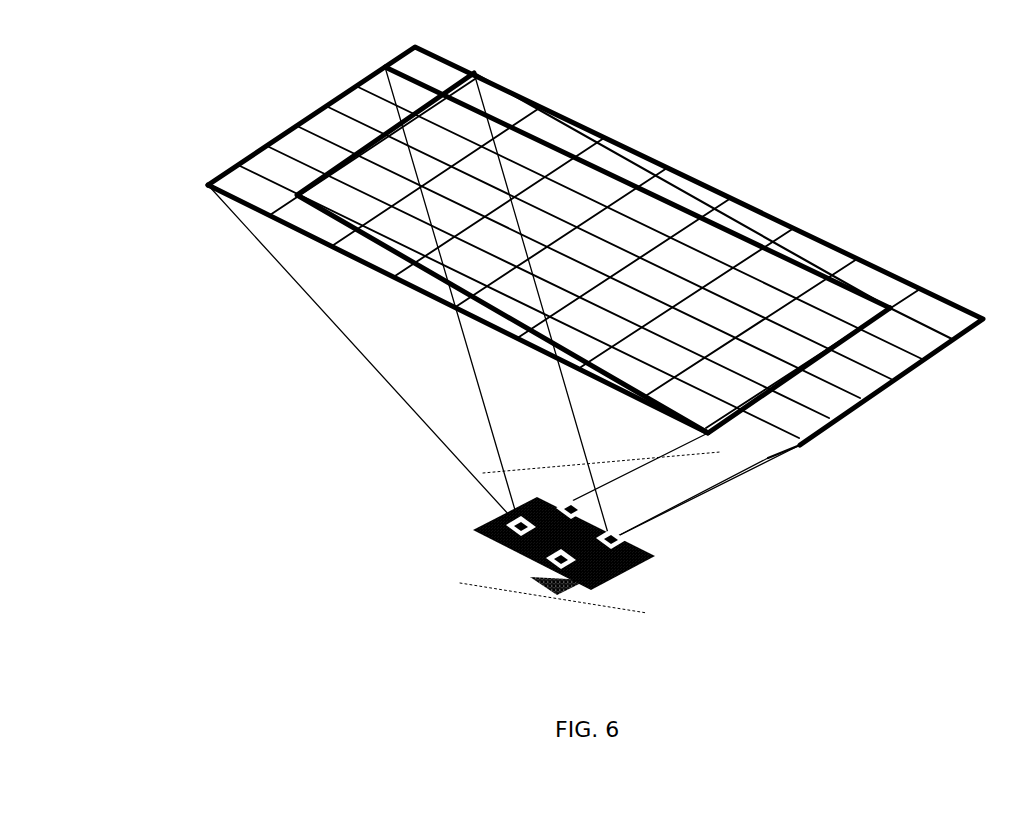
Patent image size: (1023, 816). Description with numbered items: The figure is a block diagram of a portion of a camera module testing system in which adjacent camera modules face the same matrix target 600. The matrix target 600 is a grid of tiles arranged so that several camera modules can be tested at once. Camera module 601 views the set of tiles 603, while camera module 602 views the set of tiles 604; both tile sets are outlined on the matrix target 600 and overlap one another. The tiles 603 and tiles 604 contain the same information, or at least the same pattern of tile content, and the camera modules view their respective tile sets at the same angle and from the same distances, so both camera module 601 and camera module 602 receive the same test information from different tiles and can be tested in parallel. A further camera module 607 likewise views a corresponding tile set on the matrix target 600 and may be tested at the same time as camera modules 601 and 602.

The matrix target 600 is at (714, 377).
The camera module 601 is at (505, 524).
The camera module 602 is at (627, 542).
The tiles 603 is at (228, 168).
The tiles 604 is at (503, 80).
The camera module 607 is at (553, 494).